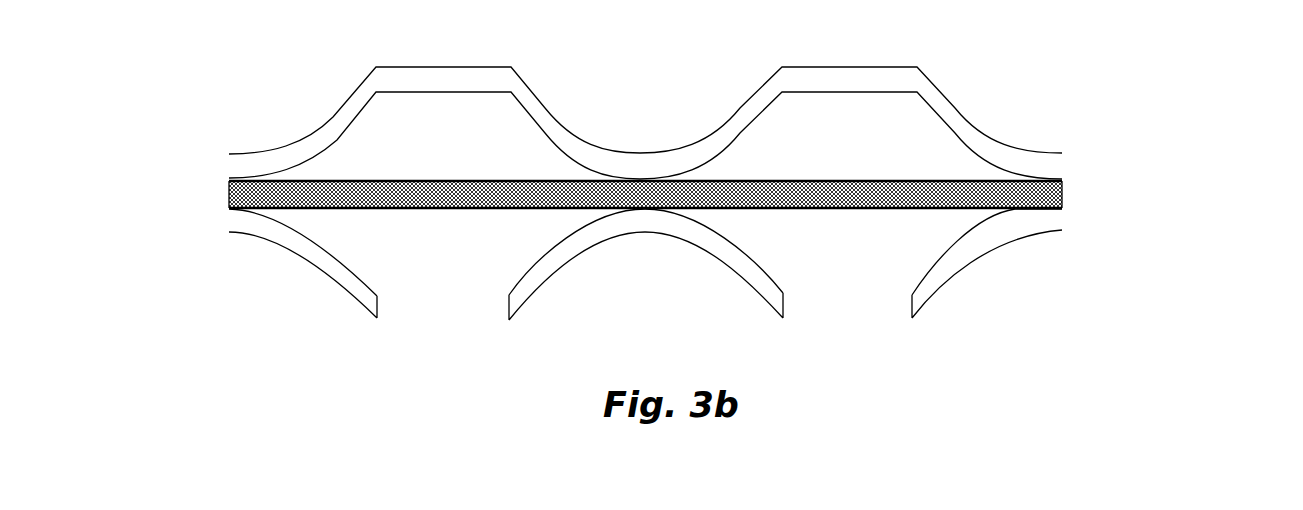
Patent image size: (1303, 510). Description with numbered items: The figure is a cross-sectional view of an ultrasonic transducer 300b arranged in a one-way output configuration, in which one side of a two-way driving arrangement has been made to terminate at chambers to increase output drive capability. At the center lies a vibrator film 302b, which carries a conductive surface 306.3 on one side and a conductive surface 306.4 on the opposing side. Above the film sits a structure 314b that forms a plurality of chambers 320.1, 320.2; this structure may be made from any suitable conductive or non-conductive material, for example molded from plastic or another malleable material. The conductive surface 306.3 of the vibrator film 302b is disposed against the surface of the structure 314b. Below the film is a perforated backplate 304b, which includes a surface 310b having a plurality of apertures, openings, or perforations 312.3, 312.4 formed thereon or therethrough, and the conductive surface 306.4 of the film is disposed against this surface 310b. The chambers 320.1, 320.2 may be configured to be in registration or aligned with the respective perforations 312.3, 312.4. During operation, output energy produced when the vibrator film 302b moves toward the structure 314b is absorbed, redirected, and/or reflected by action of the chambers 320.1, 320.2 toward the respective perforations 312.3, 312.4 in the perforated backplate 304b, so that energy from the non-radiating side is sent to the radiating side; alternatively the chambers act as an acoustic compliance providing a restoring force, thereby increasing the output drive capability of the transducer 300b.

The ultrasonic transducer 300b is at (247, 52).
The vibrator film 302b is at (1088, 196).
The perforated backplate 304b is at (206, 224).
The conductive surface 306.3 is at (1065, 181).
The conductive surface 306.4 is at (1065, 207).
The surface 310b is at (353, 268).
The aperture, opening, or perforation 312.3 is at (441, 339).
The aperture, opening, or perforation 312.4 is at (849, 337).
The structure 314b is at (203, 168).
The chamber 320.1 is at (499, 115).
The chamber 320.2 is at (907, 112).